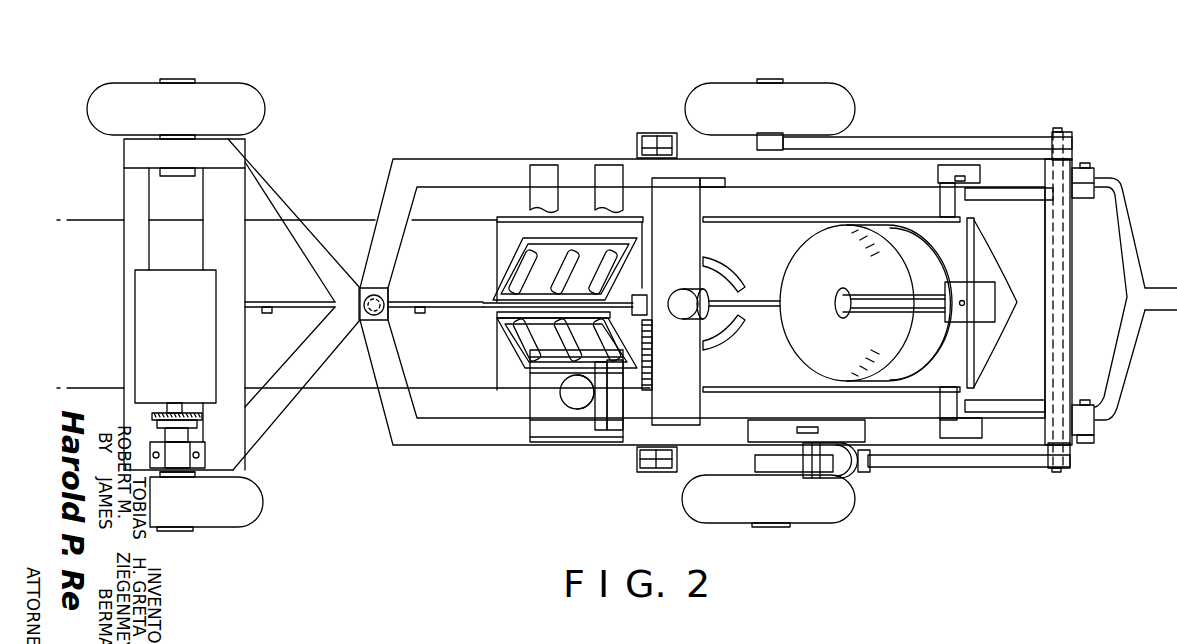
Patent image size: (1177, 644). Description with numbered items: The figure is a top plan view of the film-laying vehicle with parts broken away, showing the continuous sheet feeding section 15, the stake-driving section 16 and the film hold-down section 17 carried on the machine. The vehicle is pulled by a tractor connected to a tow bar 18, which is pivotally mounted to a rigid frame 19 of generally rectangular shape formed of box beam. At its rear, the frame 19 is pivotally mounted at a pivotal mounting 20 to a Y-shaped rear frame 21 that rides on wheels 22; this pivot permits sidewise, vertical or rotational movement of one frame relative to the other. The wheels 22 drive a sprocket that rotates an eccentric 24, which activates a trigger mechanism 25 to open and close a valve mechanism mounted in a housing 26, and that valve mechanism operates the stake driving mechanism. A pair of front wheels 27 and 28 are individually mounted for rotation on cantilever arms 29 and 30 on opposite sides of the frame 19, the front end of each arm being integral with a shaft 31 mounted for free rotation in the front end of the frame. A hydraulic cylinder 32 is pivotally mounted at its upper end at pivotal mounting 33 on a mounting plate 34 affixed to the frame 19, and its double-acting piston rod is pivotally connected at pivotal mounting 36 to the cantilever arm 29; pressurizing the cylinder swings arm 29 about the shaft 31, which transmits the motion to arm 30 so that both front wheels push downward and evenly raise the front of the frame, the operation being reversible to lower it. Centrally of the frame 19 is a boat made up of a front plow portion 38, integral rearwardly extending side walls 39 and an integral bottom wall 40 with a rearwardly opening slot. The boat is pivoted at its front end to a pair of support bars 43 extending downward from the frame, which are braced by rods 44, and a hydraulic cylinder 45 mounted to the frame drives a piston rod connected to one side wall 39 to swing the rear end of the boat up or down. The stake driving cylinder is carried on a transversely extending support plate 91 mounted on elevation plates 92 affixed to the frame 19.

The continuous sheet feeding section 15 is at (880, 198).
The stake-driving section 16 is at (664, 126).
The film hold-down section 17 is at (563, 146).
The tow bar 18 is at (1117, 225).
The rigid frame 19 is at (1012, 170).
The pivotal mounting 20 is at (383, 300).
The Y-shaped rear frame 21 is at (285, 222).
The wheels 22 is at (248, 97).
The eccentric 24 is at (157, 423).
The trigger mechanism 25 is at (177, 411).
The housing 26 is at (150, 298).
The front wheel 27 is at (838, 500).
The front wheel 28 is at (836, 95).
The cantilever arm 29 is at (955, 460).
The cantilever arm 30 is at (950, 140).
The shaft 31 is at (1068, 433).
The hydraulic cylinder 32 is at (848, 463).
The pivotal mounting 33 is at (805, 450).
The mounting plate 34 is at (840, 438).
The pivotal mounting 36 is at (867, 468).
The front plow portion 38 is at (982, 335).
The side walls 39 is at (812, 218).
The bottom wall 40 is at (807, 380).
The support bars 43 is at (941, 198).
The rods 44 is at (1020, 200).
The hydraulic cylinder 45 is at (580, 407).
The support plate 91 is at (685, 403).
The elevation plates 92 is at (710, 420).